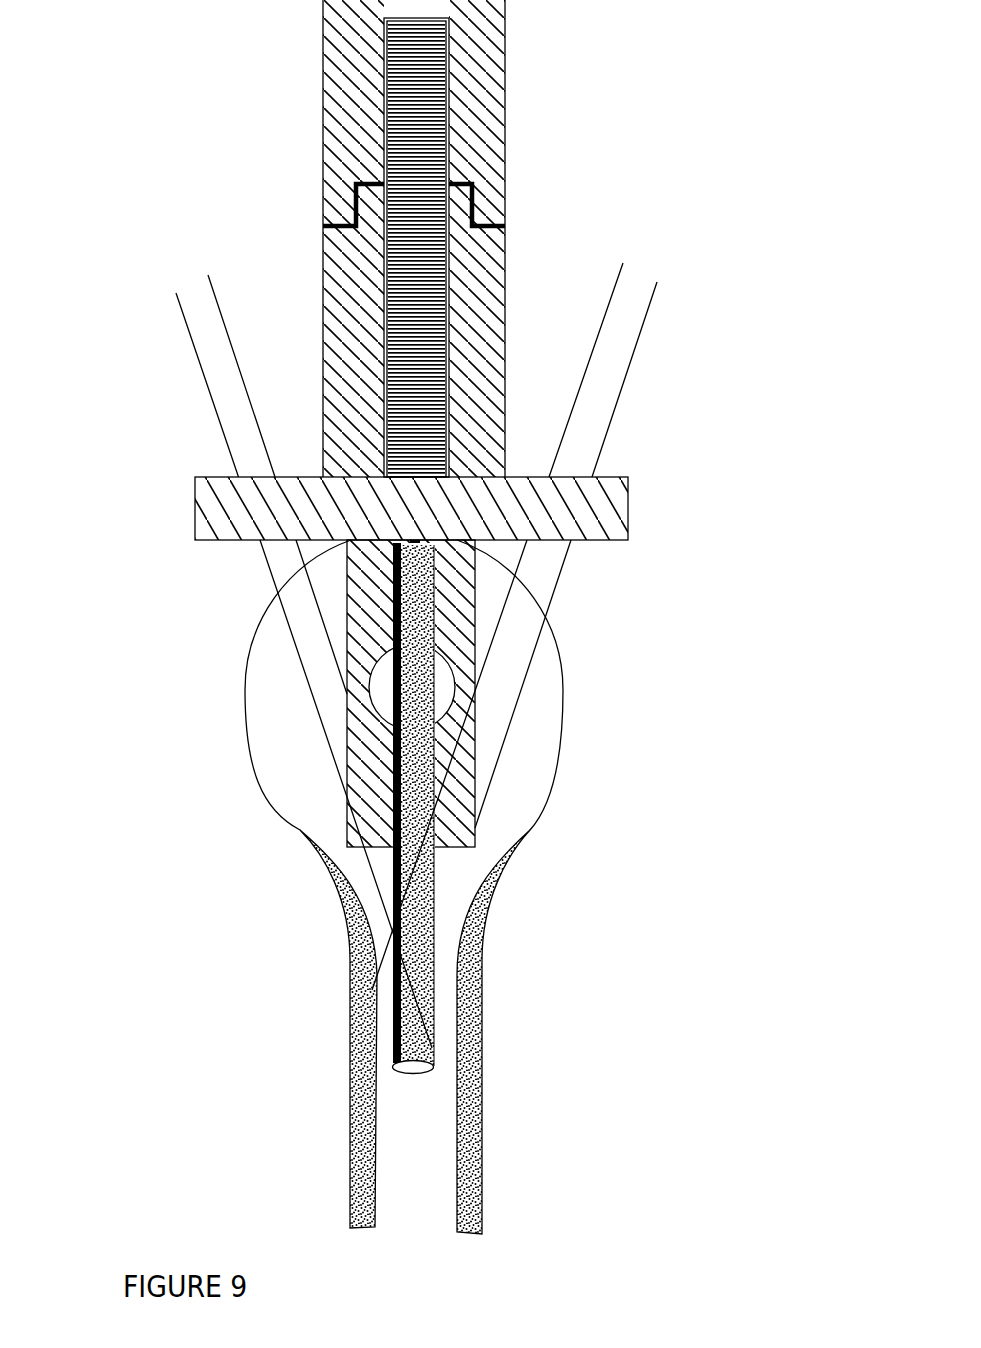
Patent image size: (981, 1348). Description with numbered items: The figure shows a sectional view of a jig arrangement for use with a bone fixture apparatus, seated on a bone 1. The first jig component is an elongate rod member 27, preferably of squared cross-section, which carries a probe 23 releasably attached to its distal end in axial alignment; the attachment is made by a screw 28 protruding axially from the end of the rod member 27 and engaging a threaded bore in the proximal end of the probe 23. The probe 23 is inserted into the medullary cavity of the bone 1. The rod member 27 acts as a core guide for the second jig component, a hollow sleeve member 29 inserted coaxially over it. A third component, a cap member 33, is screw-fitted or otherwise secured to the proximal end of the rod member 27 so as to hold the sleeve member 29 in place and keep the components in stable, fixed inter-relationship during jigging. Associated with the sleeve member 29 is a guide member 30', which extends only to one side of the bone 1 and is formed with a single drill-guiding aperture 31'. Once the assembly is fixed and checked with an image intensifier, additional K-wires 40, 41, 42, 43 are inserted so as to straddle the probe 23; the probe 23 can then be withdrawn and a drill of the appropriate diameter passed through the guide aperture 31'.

The bone 1 is at (355, 1142).
The probe 23 is at (420, 1010).
The rod member 27 is at (415, 322).
The screw 28 is at (405, 545).
The sleeve member 29 is at (505, 358).
The guide member 30' is at (517, 693).
The drill-guiding aperture 31' is at (275, 783).
The cap member 33 is at (485, 60).
The K-wire 40 is at (595, 348).
The K-wire 41 is at (652, 300).
The K-wire 42 is at (225, 328).
The K-wire 43 is at (208, 410).